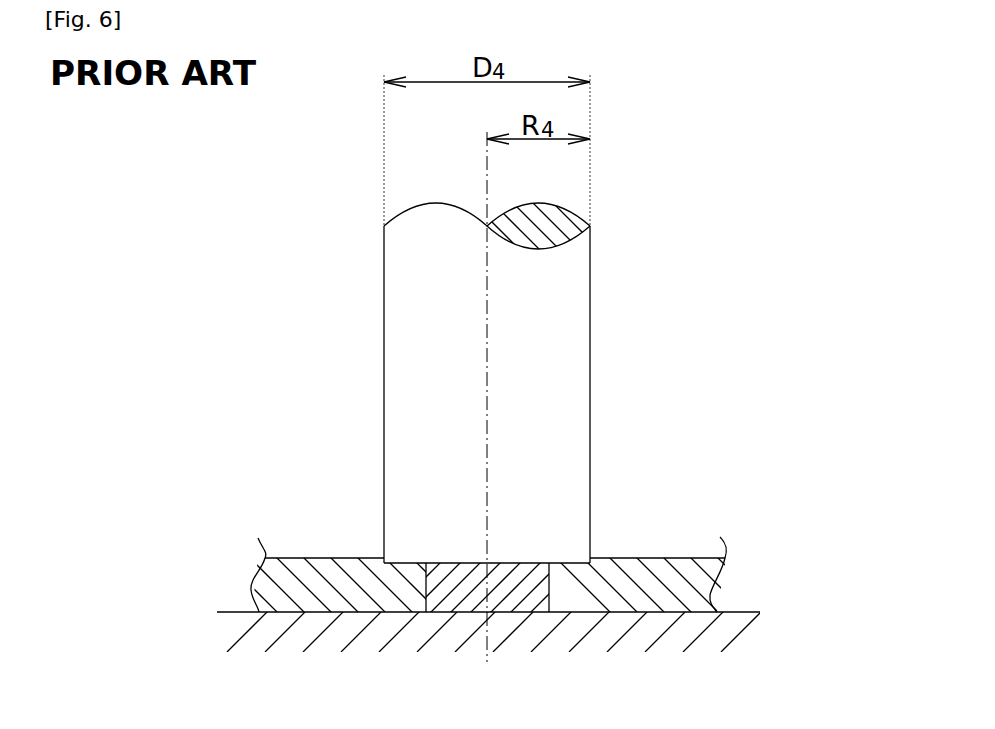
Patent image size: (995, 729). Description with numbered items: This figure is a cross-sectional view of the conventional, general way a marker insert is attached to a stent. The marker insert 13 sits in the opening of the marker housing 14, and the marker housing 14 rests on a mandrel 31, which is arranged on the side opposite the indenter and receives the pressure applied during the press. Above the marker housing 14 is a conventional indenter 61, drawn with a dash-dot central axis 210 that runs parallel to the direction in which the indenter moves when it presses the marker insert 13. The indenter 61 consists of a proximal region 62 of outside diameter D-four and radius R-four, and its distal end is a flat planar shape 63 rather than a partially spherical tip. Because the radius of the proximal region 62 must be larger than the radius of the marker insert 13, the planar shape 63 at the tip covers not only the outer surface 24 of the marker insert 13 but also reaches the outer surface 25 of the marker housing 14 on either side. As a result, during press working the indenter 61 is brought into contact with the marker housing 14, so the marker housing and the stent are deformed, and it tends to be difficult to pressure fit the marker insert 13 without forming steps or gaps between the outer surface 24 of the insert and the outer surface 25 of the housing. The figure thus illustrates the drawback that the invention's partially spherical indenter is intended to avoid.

The indenter 61 is at (360, 285).
The proximal region 62 is at (580, 383).
The central axis 210 is at (488, 327).
The outer surface 24 is at (509, 563).
The planar shape 63 is at (403, 563).
The marker insert 13 is at (447, 572).
The outer surface 25 is at (292, 558).
The marker housing 14 is at (326, 572).
The mandrel 31 is at (237, 612).